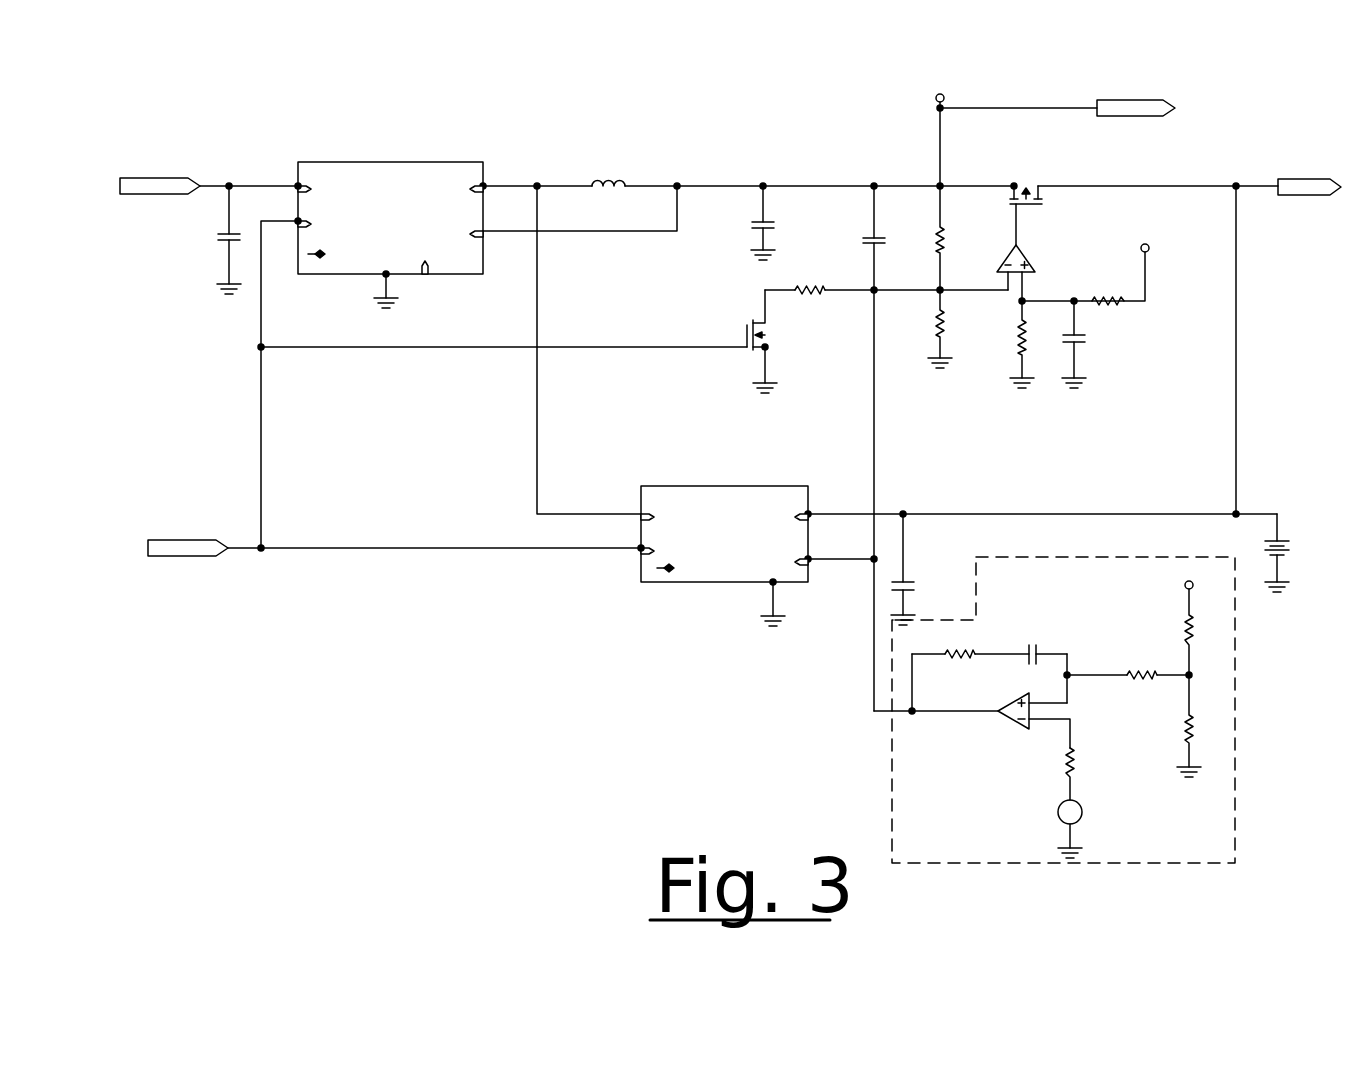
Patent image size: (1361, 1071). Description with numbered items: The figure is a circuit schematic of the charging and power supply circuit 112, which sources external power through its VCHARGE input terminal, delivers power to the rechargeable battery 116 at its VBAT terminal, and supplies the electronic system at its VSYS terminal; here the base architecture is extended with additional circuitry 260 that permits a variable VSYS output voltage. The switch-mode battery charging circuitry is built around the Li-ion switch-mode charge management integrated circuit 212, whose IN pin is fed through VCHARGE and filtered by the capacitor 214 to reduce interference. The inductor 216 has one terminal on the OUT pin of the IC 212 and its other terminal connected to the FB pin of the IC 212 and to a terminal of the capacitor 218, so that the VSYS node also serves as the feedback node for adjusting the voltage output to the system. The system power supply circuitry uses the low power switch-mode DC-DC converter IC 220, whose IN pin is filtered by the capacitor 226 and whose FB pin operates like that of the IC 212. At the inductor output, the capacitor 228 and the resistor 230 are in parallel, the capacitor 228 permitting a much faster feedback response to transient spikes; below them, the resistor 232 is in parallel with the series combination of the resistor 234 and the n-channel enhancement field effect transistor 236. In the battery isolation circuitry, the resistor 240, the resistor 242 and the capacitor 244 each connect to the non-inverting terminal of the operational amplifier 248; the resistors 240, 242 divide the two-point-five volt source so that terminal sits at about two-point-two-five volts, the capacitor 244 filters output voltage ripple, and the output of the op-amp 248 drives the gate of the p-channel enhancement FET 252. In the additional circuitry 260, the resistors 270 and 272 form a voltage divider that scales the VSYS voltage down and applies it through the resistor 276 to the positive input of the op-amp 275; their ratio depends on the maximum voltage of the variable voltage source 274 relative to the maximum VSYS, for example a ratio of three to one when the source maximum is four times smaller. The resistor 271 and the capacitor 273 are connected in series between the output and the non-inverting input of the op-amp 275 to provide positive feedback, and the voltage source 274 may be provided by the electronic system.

The charging and power supply circuit 112 is at (1236, 92).
The rechargeable battery 116 is at (1283, 530).
The switch-mode charge management integrated circuit 212 is at (338, 276).
The capacitor 214 is at (228, 222).
The inductor 216 is at (626, 186).
The capacitor 218 is at (761, 221).
The switch-mode DC-DC converter IC 220 is at (688, 584).
The capacitor 226 is at (909, 576).
The capacitor 228 is at (876, 237).
The resistor 230 is at (940, 251).
The resistor 232 is at (940, 340).
The resistor 234 is at (800, 296).
The n-channel enhancement field effect transistor 236 is at (765, 350).
The resistor 240 is at (1093, 299).
The resistor 242 is at (1020, 350).
The capacitor 244 is at (1074, 334).
The operational amplifier 248 is at (1013, 246).
The p-channel enhancement FET 252 is at (1040, 186).
The additional circuitry 260 is at (891, 765).
The resistor 270 is at (1185, 630).
The resistor 271 is at (979, 650).
The resistor 272 is at (1185, 730).
The capacitor 273 is at (1040, 652).
The variable voltage source 274 is at (1058, 808).
The operational amplifier 275 is at (997, 716).
The resistor 276 is at (1146, 670).